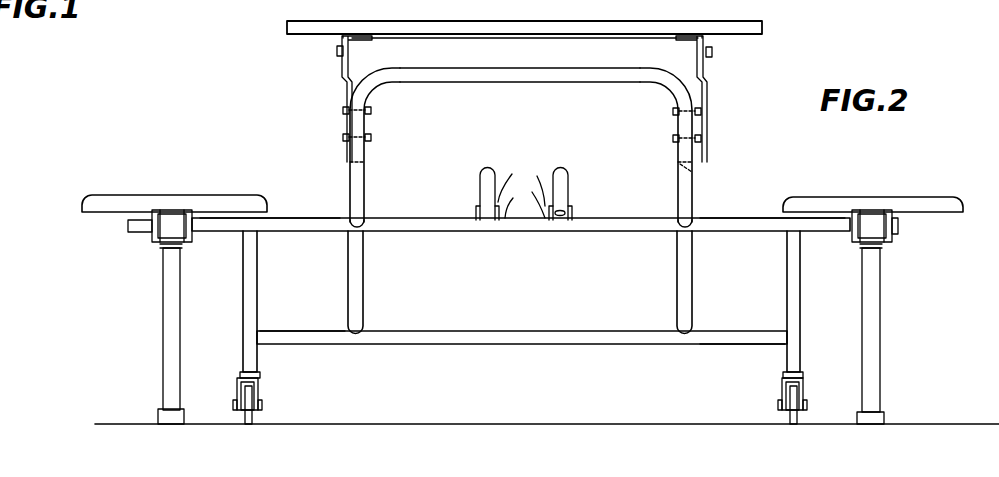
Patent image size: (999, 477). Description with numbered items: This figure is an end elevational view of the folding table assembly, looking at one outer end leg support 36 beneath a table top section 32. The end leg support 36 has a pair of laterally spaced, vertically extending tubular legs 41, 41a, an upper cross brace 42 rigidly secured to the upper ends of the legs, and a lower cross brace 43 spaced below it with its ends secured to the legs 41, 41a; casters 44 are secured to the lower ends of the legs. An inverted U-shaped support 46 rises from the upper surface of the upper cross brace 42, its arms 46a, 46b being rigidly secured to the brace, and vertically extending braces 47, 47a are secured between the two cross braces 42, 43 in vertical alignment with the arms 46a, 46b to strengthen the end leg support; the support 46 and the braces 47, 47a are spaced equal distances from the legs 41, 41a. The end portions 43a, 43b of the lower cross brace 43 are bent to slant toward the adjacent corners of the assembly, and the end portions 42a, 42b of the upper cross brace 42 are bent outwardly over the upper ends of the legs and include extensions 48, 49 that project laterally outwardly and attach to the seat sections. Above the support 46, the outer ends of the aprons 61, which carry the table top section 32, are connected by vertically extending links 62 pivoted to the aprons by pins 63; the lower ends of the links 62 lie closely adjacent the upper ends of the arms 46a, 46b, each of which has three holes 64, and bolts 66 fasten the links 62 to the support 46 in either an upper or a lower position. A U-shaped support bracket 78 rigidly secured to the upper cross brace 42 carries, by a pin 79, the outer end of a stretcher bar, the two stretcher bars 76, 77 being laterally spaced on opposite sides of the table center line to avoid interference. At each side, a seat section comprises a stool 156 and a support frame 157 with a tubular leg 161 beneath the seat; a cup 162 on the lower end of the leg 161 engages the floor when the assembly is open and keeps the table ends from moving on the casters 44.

The table top section 32 is at (535, 26).
The outer end leg support 36 is at (304, 152).
The leg 41 is at (258, 305).
The leg 41a is at (790, 282).
The upper cross brace 42 is at (521, 224).
The end portion of upper cross brace 42a is at (303, 217).
The end portion of upper cross brace 42b is at (732, 227).
The lower cross brace 43 is at (522, 338).
The end portion of lower cross brace 43a is at (316, 341).
The end portion of lower cross brace 43b is at (724, 344).
The caster 44 is at (260, 396).
The inverted U-shaped support 46 is at (552, 136).
The arm of inverted U-shaped support 46a is at (364, 174).
The arm of inverted U-shaped support 46b is at (694, 176).
The vertically extending brace 47 is at (360, 290).
The vertically extending brace 47a is at (684, 288).
The extension 48 is at (216, 235).
The extension 49 is at (835, 231).
The apron 61 is at (353, 33).
The link 62 is at (345, 87).
The pin 63 is at (336, 49).
The hole 64 is at (680, 164).
The bolt 66 is at (342, 136).
The stretcher bar 76 is at (569, 185).
The stretcher bar 77 is at (484, 166).
The U-shaped support bracket 78 is at (525, 199).
The pin 79 is at (521, 183).
The stool 156 is at (112, 193).
The support frame 157 is at (148, 322).
The tubular leg 161 is at (163, 283).
The cup 162 is at (884, 418).